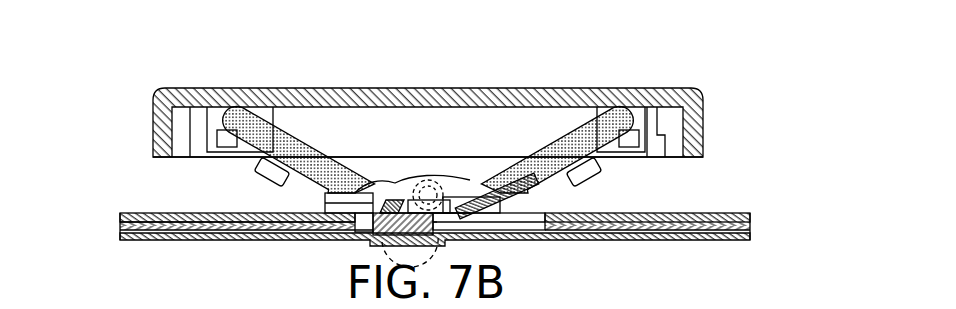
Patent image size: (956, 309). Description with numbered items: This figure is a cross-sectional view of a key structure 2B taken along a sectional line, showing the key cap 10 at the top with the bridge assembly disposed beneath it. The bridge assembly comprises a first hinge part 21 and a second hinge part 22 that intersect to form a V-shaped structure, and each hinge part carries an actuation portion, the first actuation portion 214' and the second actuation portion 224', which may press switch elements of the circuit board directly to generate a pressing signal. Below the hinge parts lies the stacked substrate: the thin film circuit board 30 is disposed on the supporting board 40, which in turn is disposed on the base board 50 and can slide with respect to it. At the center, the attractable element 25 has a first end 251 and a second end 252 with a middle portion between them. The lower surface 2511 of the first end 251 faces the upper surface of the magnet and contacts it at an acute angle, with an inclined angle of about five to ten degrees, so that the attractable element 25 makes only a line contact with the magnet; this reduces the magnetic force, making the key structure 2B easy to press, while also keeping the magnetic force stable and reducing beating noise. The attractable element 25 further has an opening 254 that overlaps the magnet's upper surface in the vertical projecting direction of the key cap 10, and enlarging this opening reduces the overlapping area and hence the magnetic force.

The key structure 2B is at (128, 64).
The key cap 10 is at (673, 93).
The first hinge part 21 is at (259, 130).
The second hinge part 22 is at (575, 140).
The attractable element 25 is at (461, 165).
The first end 251 is at (389, 198).
The lower surface 2511 is at (370, 178).
The second end 252 is at (505, 185).
The opening 254 is at (428, 194).
The first actuation portion 214' is at (243, 176).
The second actuation portion 224' is at (613, 177).
The thin film circuit board 30 is at (752, 214).
The supporting board 40 is at (752, 224).
The base board 50 is at (752, 240).